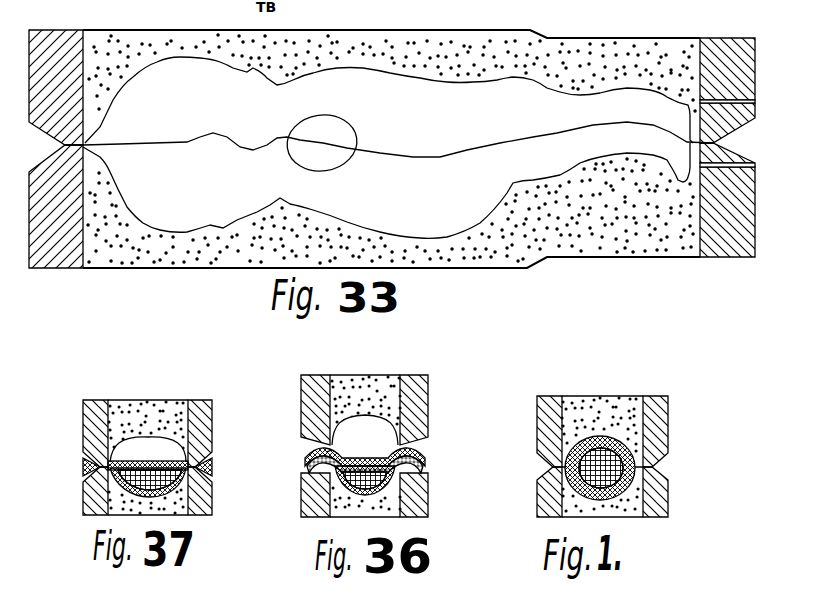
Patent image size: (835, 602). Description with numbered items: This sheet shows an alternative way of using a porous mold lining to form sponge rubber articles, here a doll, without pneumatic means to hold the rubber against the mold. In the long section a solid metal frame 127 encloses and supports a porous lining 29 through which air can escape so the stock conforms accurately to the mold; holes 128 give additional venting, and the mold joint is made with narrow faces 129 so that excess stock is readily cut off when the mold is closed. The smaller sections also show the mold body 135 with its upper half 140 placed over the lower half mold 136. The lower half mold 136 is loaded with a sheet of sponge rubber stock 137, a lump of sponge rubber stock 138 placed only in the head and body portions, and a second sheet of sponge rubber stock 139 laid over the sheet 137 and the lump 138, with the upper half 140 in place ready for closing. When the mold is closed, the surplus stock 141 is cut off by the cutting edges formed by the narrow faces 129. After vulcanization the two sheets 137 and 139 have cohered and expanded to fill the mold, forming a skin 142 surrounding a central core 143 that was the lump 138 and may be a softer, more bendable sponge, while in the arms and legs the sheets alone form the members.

In FIG. 33, the solid metal frame 127 is at (38, 30).
In FIG. 33, the holes 128 is at (742, 101).
In FIG. 33, the narrow faces 129 is at (65, 146).
In FIG. 37, the narrow faces 129 is at (110, 462).
In FIG. 36, the narrow faces 129 is at (326, 452).
In FIG. 1, the narrow faces 129 is at (646, 466).
In FIG. 33, the porous lining 29 is at (442, 62).
In FIG. 33, the mold body material 135 is at (612, 37).
In FIG. 37, the lower half mold 136 is at (208, 498).
In FIG. 36, the lower half mold 136 is at (428, 497).
In FIG. 1, the lower half mold 136 is at (666, 497).
In FIG. 36, the sheet of sponge rubber stock 137 is at (426, 466).
In FIG. 36, the lump of sponge rubber stock 138 is at (388, 486).
In FIG. 36, the sheet of sponge rubber stock 139 is at (420, 455).
In FIG. 37, the upper die block 140 is at (208, 415).
In FIG. 36, the upper die block 140 is at (428, 396).
In FIG. 1, the upper die block 140 is at (666, 421).
In FIG. 37, the surplus stock 141 is at (83, 468).
In FIG. 1, the skin 142 is at (622, 437).
In FIG. 1, the central core 143 is at (588, 437).